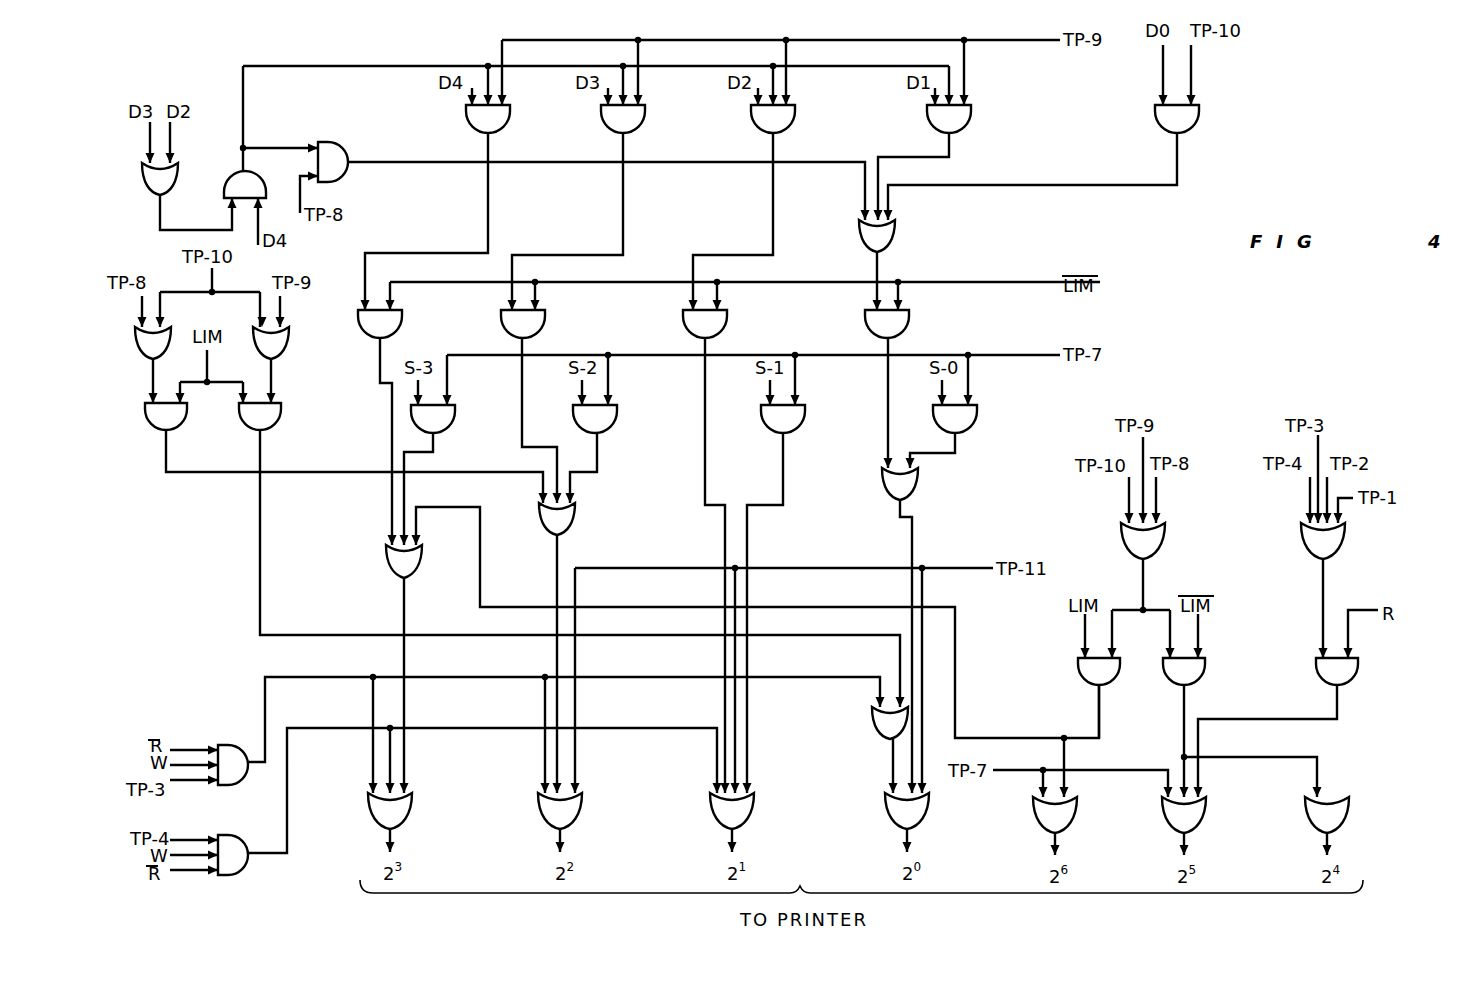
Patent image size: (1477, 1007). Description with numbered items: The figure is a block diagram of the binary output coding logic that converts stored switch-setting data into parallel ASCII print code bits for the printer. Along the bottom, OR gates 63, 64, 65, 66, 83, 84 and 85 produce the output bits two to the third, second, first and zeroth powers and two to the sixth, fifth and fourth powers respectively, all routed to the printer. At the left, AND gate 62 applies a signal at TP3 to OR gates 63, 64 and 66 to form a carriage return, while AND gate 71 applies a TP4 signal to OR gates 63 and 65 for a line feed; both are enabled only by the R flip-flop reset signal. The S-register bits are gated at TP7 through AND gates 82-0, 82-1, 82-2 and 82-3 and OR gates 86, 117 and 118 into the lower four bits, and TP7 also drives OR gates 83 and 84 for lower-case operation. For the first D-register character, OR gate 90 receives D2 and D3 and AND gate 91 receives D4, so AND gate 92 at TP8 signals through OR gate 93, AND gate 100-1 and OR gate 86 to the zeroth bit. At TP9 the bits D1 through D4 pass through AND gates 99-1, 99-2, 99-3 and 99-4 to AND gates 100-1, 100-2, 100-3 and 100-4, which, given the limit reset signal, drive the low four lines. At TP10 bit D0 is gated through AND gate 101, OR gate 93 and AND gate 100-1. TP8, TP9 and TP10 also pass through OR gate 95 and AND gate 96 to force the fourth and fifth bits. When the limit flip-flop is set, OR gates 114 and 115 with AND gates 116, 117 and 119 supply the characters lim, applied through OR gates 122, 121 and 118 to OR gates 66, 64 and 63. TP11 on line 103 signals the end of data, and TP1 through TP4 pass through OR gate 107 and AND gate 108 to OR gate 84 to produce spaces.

The OR gate 90 is at (143, 181).
The AND gate 91 is at (224, 185).
The AND gate 92 is at (340, 140).
The AND gate 99-4 is at (508, 124).
The AND gate 99-3 is at (643, 124).
The AND gate 99-2 is at (793, 124).
The AND gate 99-1 is at (969, 124).
The AND gate 101 is at (1197, 124).
The OR gate 93 is at (895, 240).
The AND gate 100-4 is at (402, 322).
The AND gate 100-3 is at (545, 322).
The AND gate 100-2 is at (727, 322).
The AND gate 100-1 is at (909, 322).
The OR gate 114 is at (136, 346).
The OR gate 115 is at (284, 346).
The AND gate 116 is at (186, 419).
The AND gate 117 is at (280, 420).
The AND gate 82-3 is at (455, 420).
The AND gate 82-2 is at (617, 420).
The AND gate 82-1 is at (805, 420).
The AND gate 82-0 is at (977, 420).
The OR gate 86 is at (918, 484).
The OR gate 121 is at (575, 520).
The OR gate 118 is at (387, 560).
The line 103 is at (946, 570).
The OR gate 95 is at (1120, 540).
The OR gate 107 is at (1345, 548).
The AND gate 119 is at (1078, 676).
The AND gate 96 is at (1205, 680).
The AND gate 108 is at (1357, 682).
The OR gate 122 is at (873, 716).
The AND gate 62 is at (227, 745).
The AND gate 71 is at (248, 878).
The OR gate 63 is at (412, 812).
The OR gate 64 is at (582, 812).
The OR gate 65 is at (754, 810).
The OR gate 66 is at (929, 810).
The OR gate 83 is at (1077, 812).
The OR gate 84 is at (1206, 812).
The OR gate 85 is at (1349, 812).